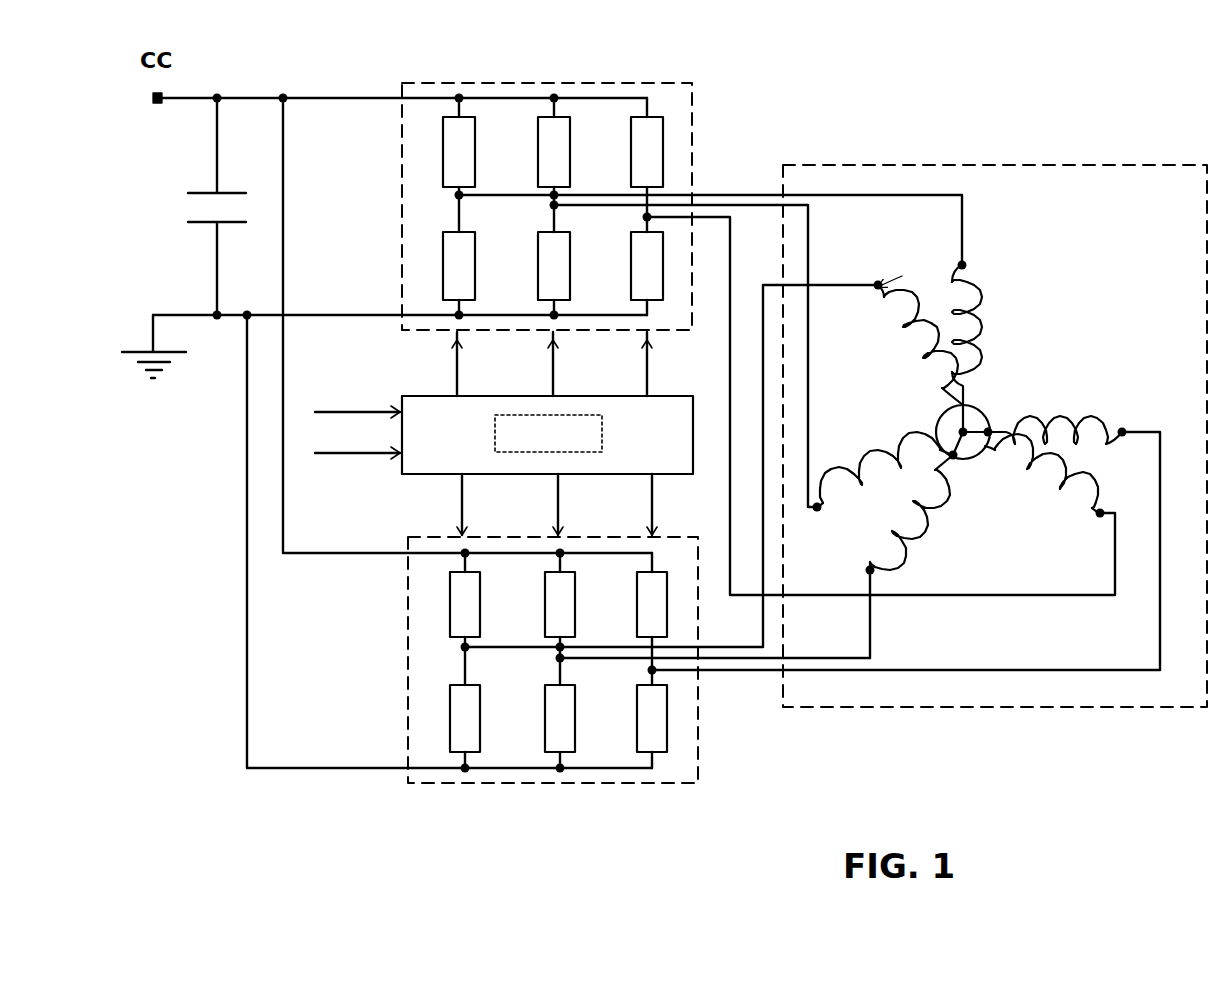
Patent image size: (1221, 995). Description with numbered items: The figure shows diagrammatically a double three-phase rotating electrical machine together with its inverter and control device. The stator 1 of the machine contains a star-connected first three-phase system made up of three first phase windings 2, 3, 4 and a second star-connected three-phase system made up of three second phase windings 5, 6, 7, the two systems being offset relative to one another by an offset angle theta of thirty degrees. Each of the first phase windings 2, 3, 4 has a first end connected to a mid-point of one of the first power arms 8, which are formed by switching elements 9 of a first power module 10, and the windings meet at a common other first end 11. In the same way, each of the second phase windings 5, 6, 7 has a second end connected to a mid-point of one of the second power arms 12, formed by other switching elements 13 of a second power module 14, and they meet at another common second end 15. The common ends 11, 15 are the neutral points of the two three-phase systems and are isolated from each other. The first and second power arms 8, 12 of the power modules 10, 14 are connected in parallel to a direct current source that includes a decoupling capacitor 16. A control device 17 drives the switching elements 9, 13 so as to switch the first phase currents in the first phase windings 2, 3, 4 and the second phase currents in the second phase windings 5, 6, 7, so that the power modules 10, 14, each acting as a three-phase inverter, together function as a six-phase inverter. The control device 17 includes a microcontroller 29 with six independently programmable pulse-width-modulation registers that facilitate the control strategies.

The stator 1 is at (1078, 162).
The first phase winding 2 is at (982, 293).
The first phase winding 3 is at (850, 506).
The first phase winding 4 is at (1040, 490).
The second phase winding 5 is at (912, 345).
The second phase winding 6 is at (930, 513).
The second phase winding 7 is at (1105, 420).
The first power arms 8 is at (455, 213).
The switching elements 9 is at (470, 165).
The first power module 10 is at (608, 82).
The common other first end 11 is at (976, 412).
The second power arms 12 is at (458, 665).
The other switching elements 13 is at (480, 620).
The second power module 14 is at (700, 770).
The common second end 15 is at (966, 458).
The decoupling capacitor 16 is at (222, 190).
The control device 17 is at (662, 393).
The microcontroller 29 is at (600, 450).